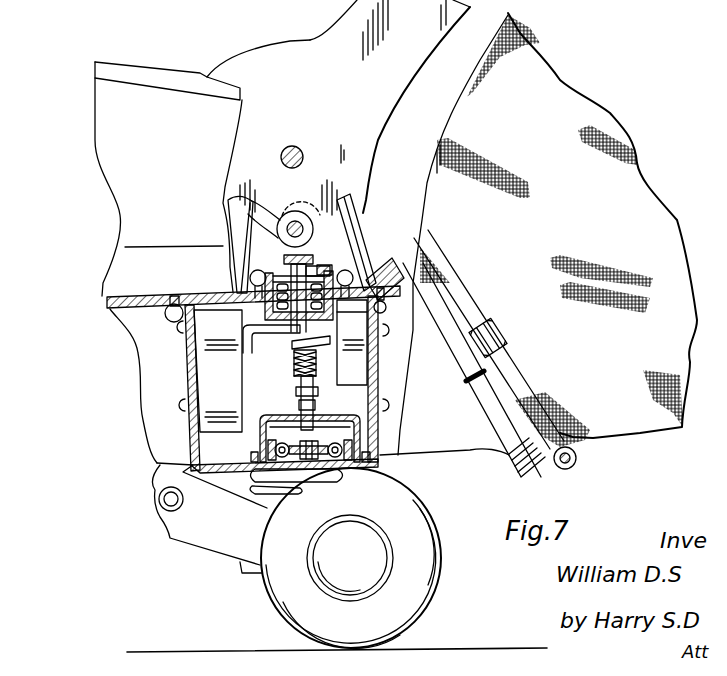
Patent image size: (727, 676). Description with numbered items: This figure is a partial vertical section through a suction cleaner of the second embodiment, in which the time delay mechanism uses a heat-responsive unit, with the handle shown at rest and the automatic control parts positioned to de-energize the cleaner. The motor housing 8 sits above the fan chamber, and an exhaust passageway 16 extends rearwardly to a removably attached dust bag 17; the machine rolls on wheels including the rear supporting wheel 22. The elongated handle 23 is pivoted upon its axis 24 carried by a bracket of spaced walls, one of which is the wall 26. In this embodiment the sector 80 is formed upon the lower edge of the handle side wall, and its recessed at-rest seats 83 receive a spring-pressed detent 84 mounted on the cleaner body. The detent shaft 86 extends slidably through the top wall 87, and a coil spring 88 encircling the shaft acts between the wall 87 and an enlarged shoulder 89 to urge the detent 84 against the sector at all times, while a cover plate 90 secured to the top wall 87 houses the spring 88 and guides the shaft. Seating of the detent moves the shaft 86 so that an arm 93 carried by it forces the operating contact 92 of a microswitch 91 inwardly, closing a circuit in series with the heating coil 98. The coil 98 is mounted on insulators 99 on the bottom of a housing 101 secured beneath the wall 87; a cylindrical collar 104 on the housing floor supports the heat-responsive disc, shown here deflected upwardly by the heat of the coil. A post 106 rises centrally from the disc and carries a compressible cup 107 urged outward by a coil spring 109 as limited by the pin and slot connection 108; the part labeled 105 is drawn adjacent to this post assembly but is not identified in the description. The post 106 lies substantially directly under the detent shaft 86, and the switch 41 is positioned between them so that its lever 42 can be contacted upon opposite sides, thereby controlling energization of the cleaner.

The motor housing 8 is at (118, 127).
The handle 23 is at (350, 3).
The pivot axis 24 is at (292, 146).
The dust bag 17 is at (530, 227).
The exhaust passageway 16 is at (478, 353).
The at rest seats 83 is at (352, 200).
The sector 80 is at (263, 225).
The bracket wall 26 is at (250, 248).
The detent 84 is at (305, 231).
The detent shaft 86 is at (284, 259).
The enlarged shoulder 89 is at (312, 270).
The cover plate 90 is at (325, 276).
The top wall 87 is at (217, 293).
The coil spring 88 is at (287, 298).
The operating contact 92 is at (283, 384).
The microswitch 91 is at (218, 371).
The switch 41 is at (352, 342).
The switch lever 42 is at (312, 336).
The arm 93 is at (254, 336).
The coil spring 109 is at (302, 362).
The pin and slot connection 108 is at (300, 391).
The compressible cup 107 is at (320, 395).
The post 106 is at (320, 405).
The rod 105 is at (306, 420).
The cylindrical collar 104 is at (262, 438).
The insulators 99 is at (296, 449).
The housing 101 is at (192, 432).
The heating coil 98 is at (348, 458).
The rear supporting wheel 22 is at (280, 597).